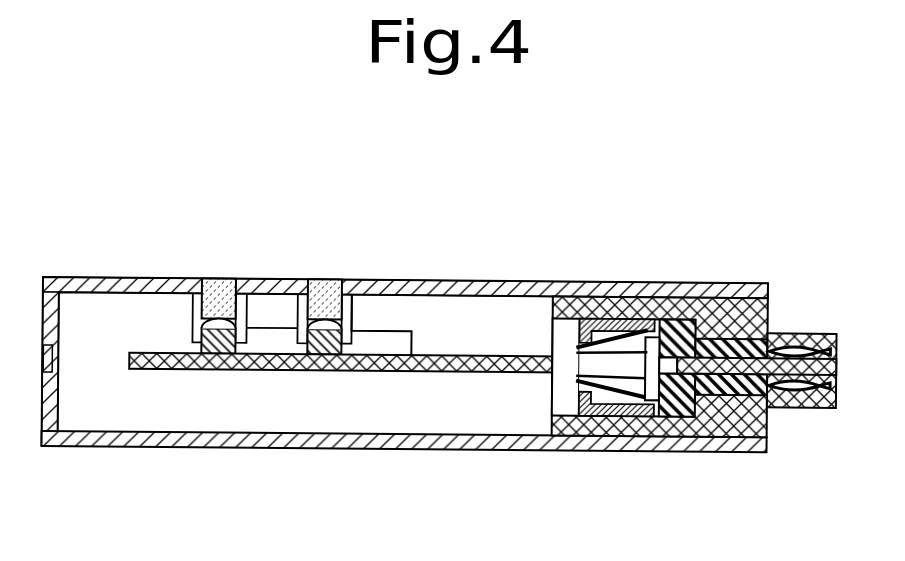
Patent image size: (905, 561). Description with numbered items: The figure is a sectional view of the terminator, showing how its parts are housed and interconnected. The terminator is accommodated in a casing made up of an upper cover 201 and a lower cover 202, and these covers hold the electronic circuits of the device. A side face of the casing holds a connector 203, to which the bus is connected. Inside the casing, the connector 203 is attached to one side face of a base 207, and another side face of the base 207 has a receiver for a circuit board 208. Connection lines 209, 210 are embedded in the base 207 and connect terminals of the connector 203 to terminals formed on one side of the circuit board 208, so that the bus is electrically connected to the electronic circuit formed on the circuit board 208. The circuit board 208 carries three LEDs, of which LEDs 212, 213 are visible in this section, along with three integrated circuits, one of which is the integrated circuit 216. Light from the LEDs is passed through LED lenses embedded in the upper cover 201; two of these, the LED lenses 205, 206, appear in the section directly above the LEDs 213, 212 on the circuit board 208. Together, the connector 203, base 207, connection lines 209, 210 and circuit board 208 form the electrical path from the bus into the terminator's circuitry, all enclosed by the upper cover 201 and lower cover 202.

The upper cover 201 is at (523, 289).
The lower cover 202 is at (488, 447).
The connector 203 is at (803, 403).
The LED lens 205 is at (322, 290).
The LED lens 206 is at (220, 290).
The base 207 is at (768, 315).
The circuit board 208 is at (400, 371).
The connection line 209 is at (677, 320).
The connection line 210 is at (672, 402).
The LED 212 is at (316, 355).
The LED 213 is at (218, 354).
The integrated circuit 216 is at (381, 340).